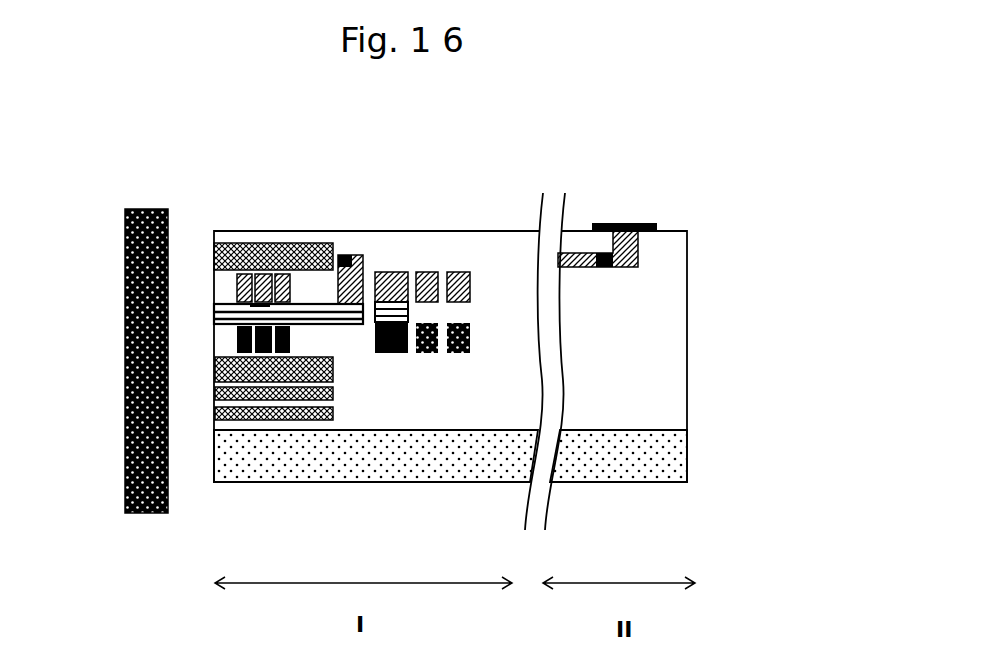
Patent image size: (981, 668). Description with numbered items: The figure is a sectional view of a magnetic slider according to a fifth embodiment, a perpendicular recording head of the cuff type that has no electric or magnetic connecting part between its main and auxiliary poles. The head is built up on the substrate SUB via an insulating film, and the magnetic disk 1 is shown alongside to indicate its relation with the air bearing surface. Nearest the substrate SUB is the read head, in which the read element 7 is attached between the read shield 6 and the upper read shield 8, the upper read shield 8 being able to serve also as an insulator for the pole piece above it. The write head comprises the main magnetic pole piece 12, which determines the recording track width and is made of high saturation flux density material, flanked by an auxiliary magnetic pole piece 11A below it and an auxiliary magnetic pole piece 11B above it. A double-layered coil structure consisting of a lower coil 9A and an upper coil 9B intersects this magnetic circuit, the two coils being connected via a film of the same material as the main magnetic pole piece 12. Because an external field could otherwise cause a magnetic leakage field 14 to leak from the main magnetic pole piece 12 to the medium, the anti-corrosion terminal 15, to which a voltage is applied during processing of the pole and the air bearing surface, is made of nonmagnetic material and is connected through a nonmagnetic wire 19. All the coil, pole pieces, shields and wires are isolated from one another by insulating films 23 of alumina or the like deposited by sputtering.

The magnetic disk 1 is at (125, 425).
The read shield 6 is at (312, 420).
The read element 7 is at (222, 420).
The upper read shield 8 is at (271, 395).
The lower coil 9A is at (240, 334).
The upper coil 9B is at (282, 282).
The auxiliary magnetic pole piece 11A is at (300, 372).
The auxiliary magnetic pole piece 11B is at (298, 250).
The main magnetic pole piece 12 is at (317, 303).
The magnetic leakage field 14 is at (259, 306).
The anti-corrosion terminal 15 is at (638, 224).
The nonmagnetic wire 19 is at (353, 256).
The insulating film 23 is at (623, 391).
The substrate SUB is at (430, 460).